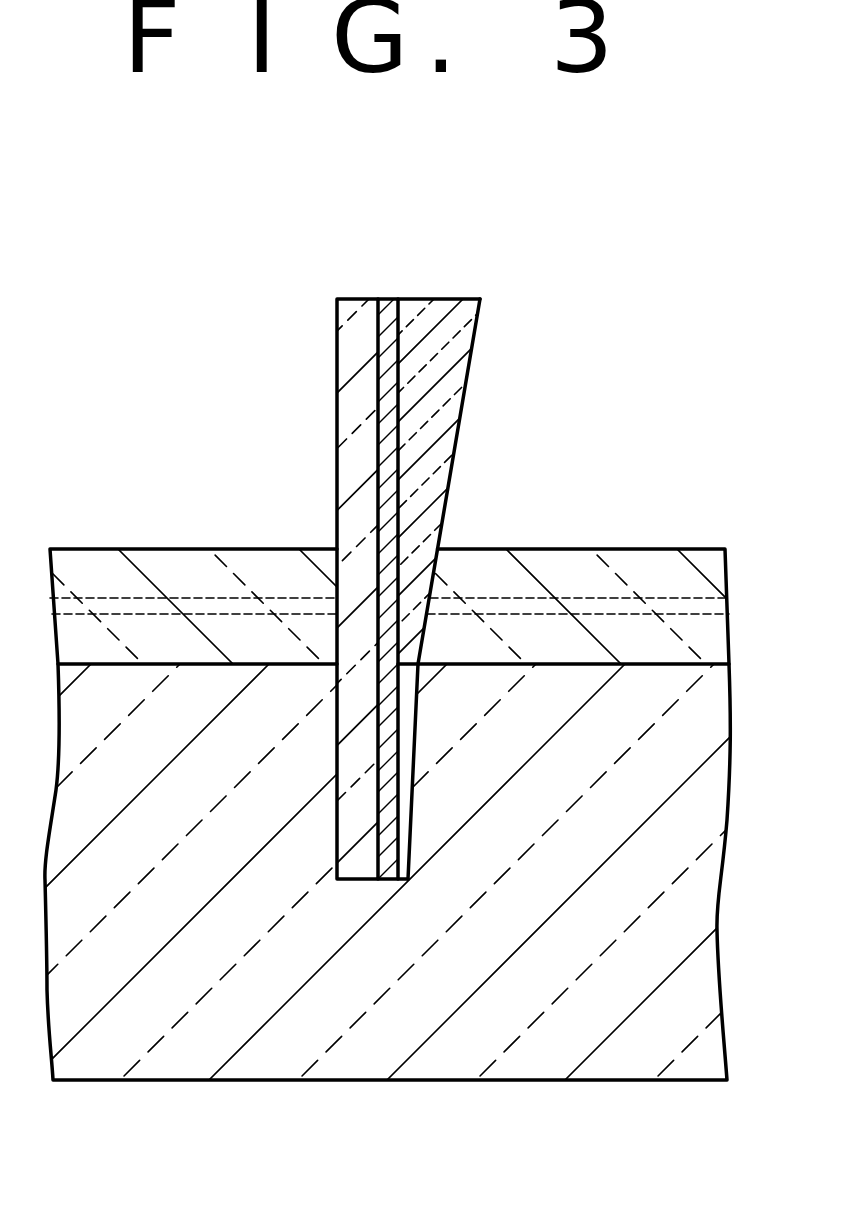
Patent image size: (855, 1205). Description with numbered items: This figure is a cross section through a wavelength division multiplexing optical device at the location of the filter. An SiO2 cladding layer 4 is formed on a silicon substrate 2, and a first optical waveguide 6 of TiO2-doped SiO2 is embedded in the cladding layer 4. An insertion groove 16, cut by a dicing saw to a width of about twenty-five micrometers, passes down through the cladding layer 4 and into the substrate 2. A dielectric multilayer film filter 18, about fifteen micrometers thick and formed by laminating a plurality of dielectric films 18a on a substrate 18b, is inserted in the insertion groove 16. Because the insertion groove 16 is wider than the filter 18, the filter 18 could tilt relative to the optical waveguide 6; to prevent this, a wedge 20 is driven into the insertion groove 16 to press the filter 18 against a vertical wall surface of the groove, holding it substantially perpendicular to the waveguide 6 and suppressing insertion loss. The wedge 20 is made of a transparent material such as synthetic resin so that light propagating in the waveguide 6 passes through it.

The silicon substrate 2 is at (425, 1067).
The cladding layer 4 is at (703, 558).
The first optical waveguide 6 is at (622, 607).
The insertion groove 16 is at (419, 698).
The dielectric multilayer film filter 18 is at (333, 445).
The dielectric films 18a is at (356, 312).
The substrate 18b is at (388, 302).
The wedge 20 is at (460, 345).